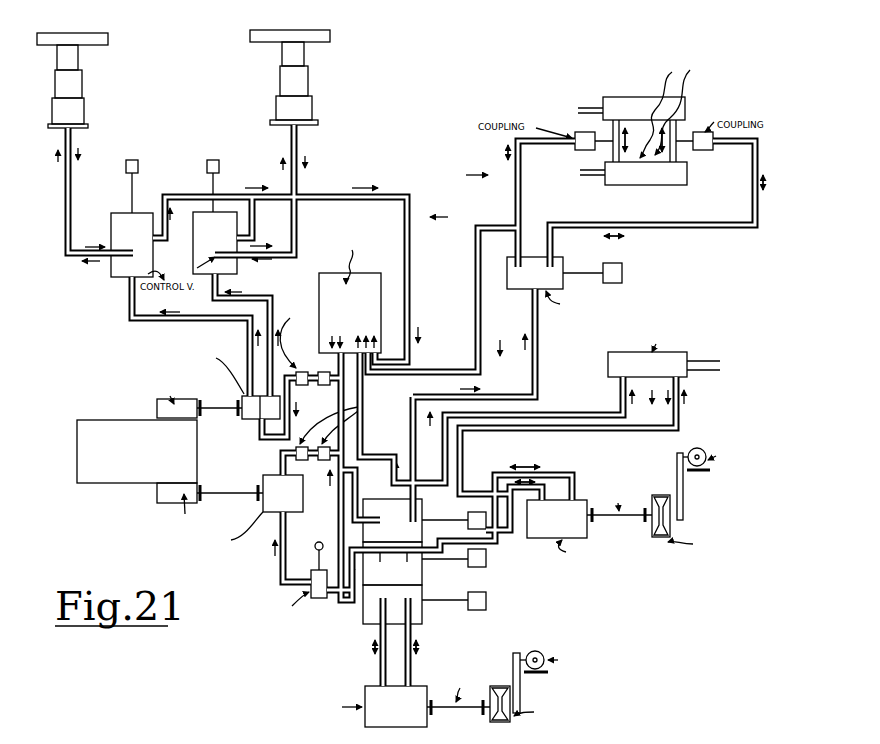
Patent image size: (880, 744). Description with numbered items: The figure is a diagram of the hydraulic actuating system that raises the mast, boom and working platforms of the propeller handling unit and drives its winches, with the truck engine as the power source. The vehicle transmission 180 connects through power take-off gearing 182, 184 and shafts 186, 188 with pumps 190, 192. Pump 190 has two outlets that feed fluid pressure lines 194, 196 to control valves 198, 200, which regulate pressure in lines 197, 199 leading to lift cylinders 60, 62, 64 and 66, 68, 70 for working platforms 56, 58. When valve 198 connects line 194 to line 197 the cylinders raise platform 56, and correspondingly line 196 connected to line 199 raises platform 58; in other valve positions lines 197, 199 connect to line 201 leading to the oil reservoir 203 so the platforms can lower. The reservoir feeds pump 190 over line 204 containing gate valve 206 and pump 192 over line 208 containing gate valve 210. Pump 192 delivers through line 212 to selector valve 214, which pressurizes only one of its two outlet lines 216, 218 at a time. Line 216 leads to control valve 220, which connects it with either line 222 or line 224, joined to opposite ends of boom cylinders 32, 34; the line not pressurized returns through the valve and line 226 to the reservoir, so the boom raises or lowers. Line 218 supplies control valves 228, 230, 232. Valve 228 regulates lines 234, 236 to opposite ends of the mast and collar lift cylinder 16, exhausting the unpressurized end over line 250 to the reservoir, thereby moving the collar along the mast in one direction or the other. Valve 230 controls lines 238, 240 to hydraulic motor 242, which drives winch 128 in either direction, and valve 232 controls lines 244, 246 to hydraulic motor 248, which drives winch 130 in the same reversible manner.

The working platform 56 is at (108, 42).
The lift cylinder 64 is at (75, 60).
The lift cylinder 62 is at (82, 78).
The lift cylinder 60 is at (88, 118).
The working platform 58 is at (330, 36).
The lift cylinder 70 is at (282, 52).
The lift cylinder 68 is at (282, 72).
The lift cylinder 66 is at (278, 106).
The line 197 is at (72, 208).
The line 199 is at (297, 150).
The control valve 198 is at (113, 240).
The control valve 200 is at (228, 232).
The line 201 is at (410, 210).
The fluid pressure line 196 is at (226, 290).
The fluid pressure line 194 is at (130, 318).
The transmission 180 is at (112, 480).
The power take-off gearing 182 is at (156, 406).
The power take-off gearing 184 is at (156, 504).
The shaft 186 is at (242, 400).
The shaft 188 is at (262, 508).
The pump 190 is at (220, 412).
The pump 192 is at (262, 498).
The oil reservoir 203 is at (363, 278).
The line 204 is at (355, 456).
The gate valve 206 is at (350, 388).
The line 208 is at (288, 414).
The gate valve 210 is at (344, 443).
The line 212 is at (282, 576).
The selector valve 214 is at (322, 600).
The outlet line 218 is at (345, 596).
The outlet line 216 is at (500, 397).
The line 250 is at (418, 418).
The line 226 is at (478, 282).
The line 224 is at (532, 198).
The line 222 is at (770, 160).
The control valve 220 is at (565, 263).
The boom cylinder 34 is at (605, 98).
The boom cylinder 32 is at (665, 185).
The mast and collar lift cylinder 16 is at (720, 367).
The line 234 is at (535, 418).
The line 236 is at (540, 432).
The control valve 228 is at (422, 516).
The control valve 230 is at (424, 579).
The control valve 232 is at (416, 612).
The line 244 is at (380, 676).
The line 246 is at (410, 676).
The hydraulic motor 248 is at (412, 727).
The hydraulic motor 242 is at (587, 535).
The line 238 is at (573, 476).
The line 240 is at (545, 495).
The winch 128 is at (705, 448).
The winch 130 is at (542, 652).